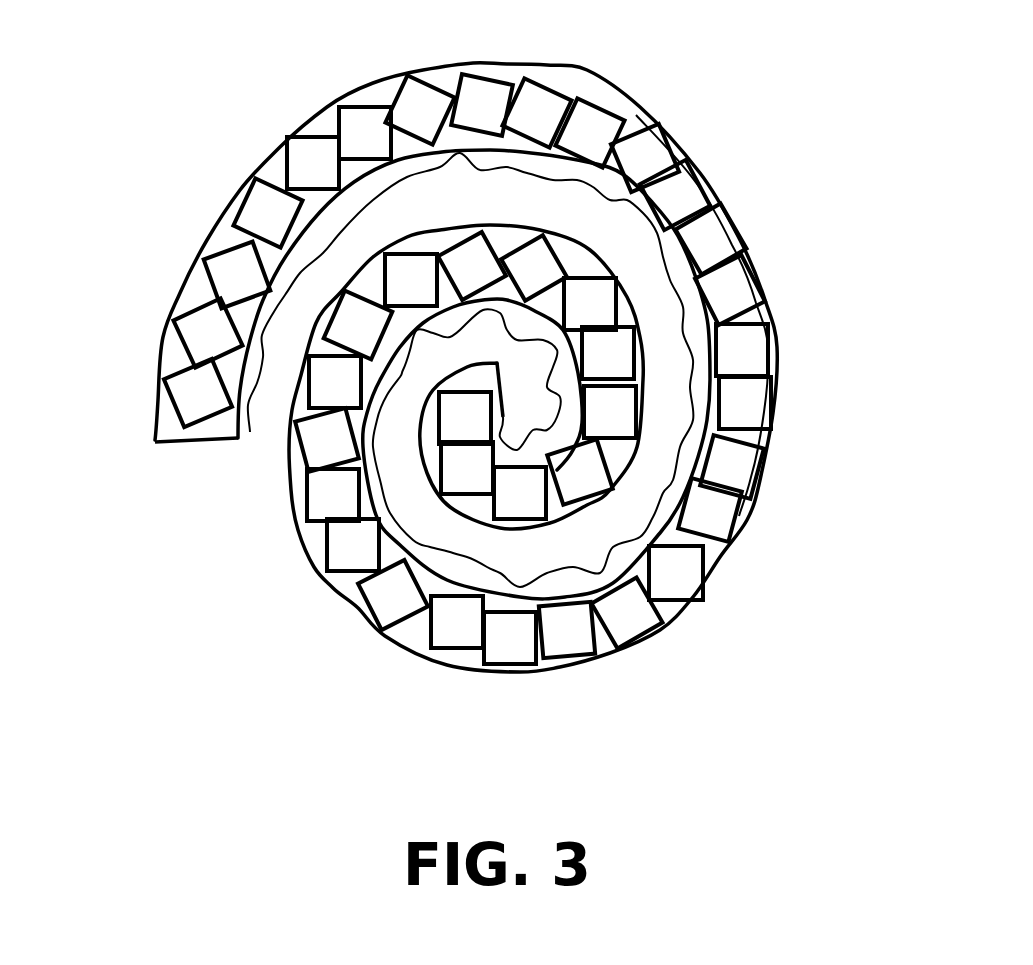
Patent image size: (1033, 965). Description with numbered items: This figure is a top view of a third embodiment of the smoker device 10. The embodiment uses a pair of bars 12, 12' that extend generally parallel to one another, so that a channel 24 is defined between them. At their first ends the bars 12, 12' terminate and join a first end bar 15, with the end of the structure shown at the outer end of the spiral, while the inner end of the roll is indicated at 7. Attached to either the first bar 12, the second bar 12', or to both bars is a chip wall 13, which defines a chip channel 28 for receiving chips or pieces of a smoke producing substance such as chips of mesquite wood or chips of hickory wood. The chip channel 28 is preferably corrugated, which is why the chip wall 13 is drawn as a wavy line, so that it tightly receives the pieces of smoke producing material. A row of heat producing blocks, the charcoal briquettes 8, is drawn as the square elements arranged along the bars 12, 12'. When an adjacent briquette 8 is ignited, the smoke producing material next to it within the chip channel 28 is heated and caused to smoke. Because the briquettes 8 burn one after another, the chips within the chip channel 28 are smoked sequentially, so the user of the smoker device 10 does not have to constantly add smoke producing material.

The inner end of rolled sheet 7 is at (497, 365).
The charcoal briquette 8 is at (243, 230).
The smoker device 10 is at (293, 707).
The first bar 12 is at (526, 367).
The second bar 12' is at (757, 315).
The chip wall 13 is at (560, 210).
The first end bar 15 is at (185, 447).
The channel 24 is at (758, 437).
The chip channel 28 is at (437, 170).